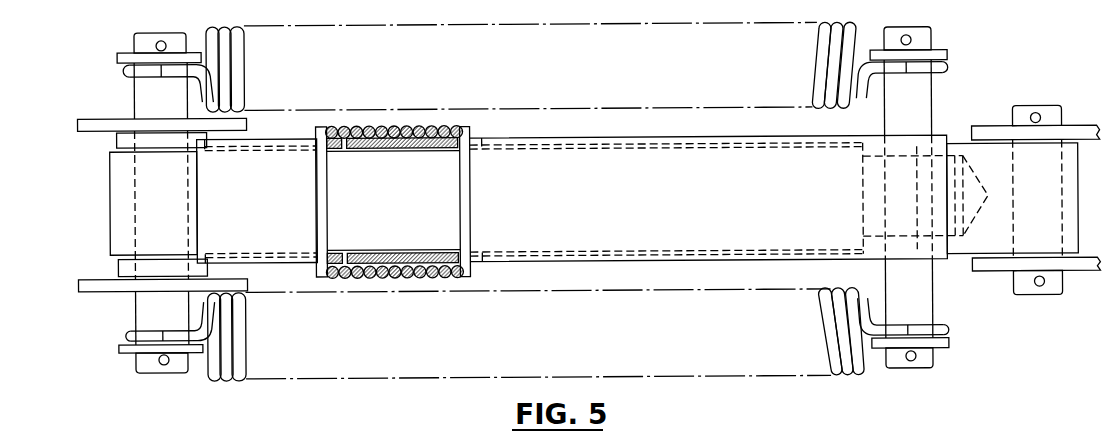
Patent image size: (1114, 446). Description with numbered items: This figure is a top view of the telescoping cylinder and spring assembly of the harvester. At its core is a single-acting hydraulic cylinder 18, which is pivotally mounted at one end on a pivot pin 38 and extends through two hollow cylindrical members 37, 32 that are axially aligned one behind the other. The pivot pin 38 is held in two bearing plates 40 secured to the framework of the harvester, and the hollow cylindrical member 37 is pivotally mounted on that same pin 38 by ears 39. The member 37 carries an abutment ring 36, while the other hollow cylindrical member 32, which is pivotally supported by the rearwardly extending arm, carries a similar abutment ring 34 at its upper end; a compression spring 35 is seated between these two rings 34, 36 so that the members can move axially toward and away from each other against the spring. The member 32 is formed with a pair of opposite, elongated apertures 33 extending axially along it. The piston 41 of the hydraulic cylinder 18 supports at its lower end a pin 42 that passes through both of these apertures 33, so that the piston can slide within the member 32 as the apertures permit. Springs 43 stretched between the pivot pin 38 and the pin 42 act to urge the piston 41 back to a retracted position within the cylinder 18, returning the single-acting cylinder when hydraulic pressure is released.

The hydraulic cylinder 18 is at (110, 204).
The hollow cylindrical member 32 is at (553, 138).
The elongated apertures 33 is at (693, 138).
The abutment ring 34 is at (470, 130).
The compression spring 35 is at (393, 127).
The abutment ring 36 is at (320, 125).
The hollow cylindrical member 37 is at (272, 137).
The pivot pin 38 is at (135, 94).
The ears 39 is at (117, 142).
The bearing plates 40 is at (110, 129).
The piston 41 is at (872, 158).
The pin 42 is at (933, 108).
The springs 43 is at (726, 24).